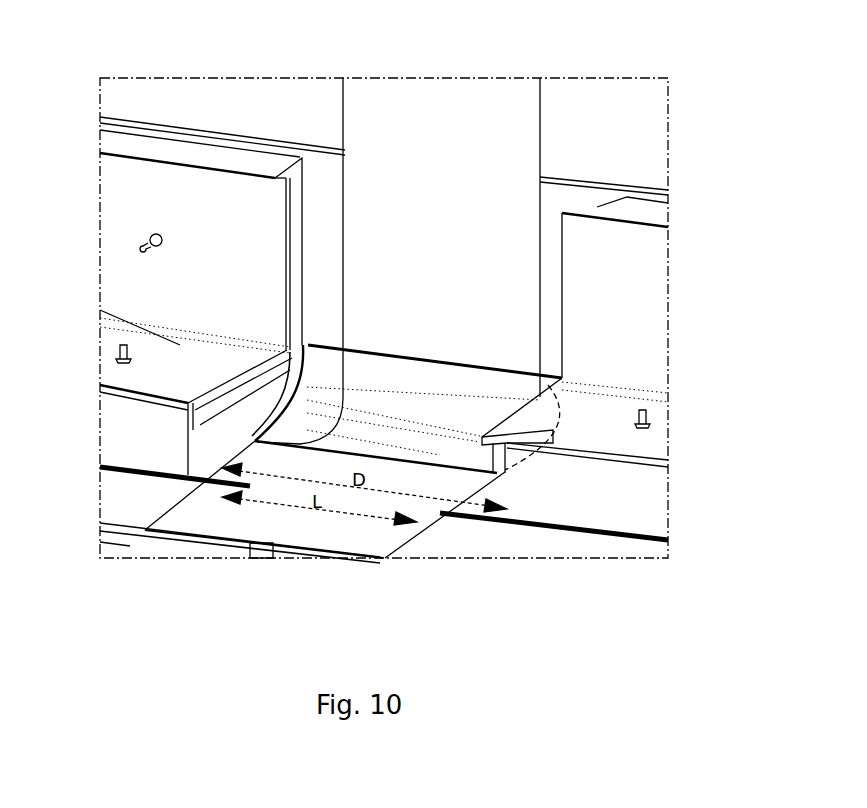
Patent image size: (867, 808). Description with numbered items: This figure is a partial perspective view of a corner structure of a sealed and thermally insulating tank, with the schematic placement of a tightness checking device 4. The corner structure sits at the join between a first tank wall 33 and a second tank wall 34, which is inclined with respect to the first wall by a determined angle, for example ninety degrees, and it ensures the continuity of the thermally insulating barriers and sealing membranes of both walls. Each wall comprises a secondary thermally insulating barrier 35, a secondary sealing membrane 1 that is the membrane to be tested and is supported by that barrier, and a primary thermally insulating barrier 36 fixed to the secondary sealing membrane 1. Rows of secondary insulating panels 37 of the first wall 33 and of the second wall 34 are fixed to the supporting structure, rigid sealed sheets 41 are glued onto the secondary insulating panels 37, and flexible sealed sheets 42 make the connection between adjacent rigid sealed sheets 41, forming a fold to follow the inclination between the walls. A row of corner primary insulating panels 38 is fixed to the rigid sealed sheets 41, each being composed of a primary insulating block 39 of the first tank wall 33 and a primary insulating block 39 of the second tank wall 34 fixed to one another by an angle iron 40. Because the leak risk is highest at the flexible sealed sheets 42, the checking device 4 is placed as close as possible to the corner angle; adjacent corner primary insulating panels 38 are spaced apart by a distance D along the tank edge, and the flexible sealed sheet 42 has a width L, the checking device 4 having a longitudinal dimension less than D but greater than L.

The secondary sealing membrane 1 is at (612, 551).
The tightness checking device 4 is at (283, 387).
The first tank wall 33 is at (470, 535).
The second tank wall 34 is at (142, 100).
The secondary thermally insulating barrier 35 is at (163, 548).
The primary thermally insulating barrier 36 is at (133, 415).
The secondary insulating panels 37 is at (117, 547).
The corner primary insulating panels 38 is at (633, 460).
The primary insulating block 39 is at (618, 500).
The angle iron 40 is at (633, 316).
The rigid sealed sheets 41 is at (140, 503).
The flexible sealed sheets 42 is at (449, 143).